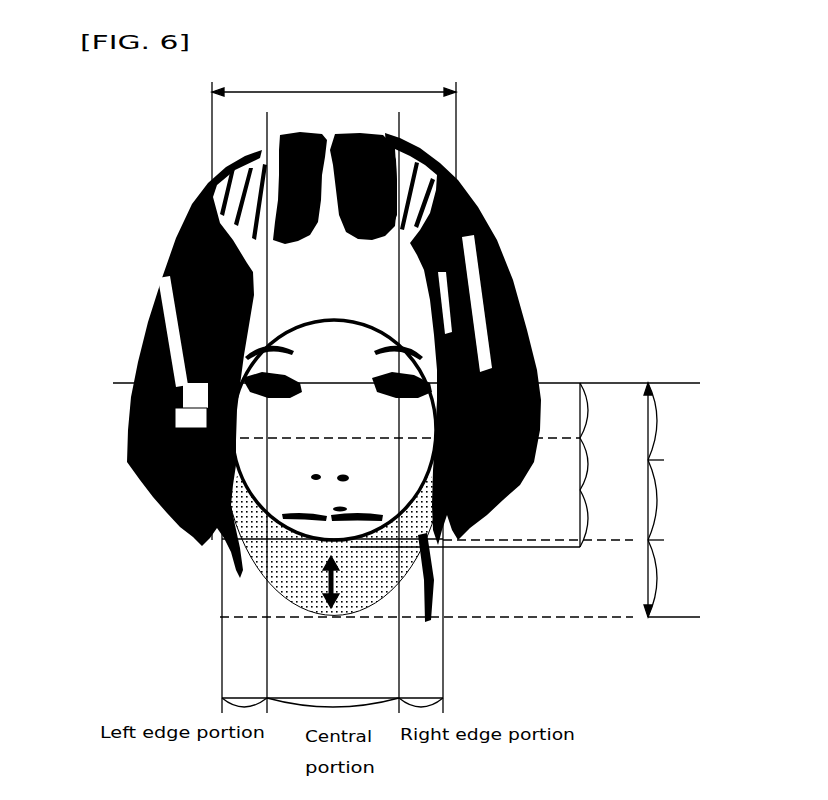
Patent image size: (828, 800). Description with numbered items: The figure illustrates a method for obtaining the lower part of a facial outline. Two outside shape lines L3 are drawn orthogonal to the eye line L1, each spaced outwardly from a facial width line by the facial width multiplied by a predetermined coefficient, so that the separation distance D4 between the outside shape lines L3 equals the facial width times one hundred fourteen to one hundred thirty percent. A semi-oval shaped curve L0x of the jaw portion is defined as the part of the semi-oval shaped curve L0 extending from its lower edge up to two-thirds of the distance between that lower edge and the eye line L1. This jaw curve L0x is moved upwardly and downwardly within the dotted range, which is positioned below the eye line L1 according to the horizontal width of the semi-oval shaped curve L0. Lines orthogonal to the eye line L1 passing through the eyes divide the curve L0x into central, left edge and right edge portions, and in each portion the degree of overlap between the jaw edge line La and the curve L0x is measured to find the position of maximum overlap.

The eye line L1 is at (389, 385).
The outside shape lines L3 is at (336, 298).
The separation distance between the outside shape lines D4 is at (334, 85).
The semi-oval shaped curve L0 is at (191, 418).
The semi-oval shaped curve of the jaw portion L0x is at (318, 550).
The jaw edge line La is at (378, 586).